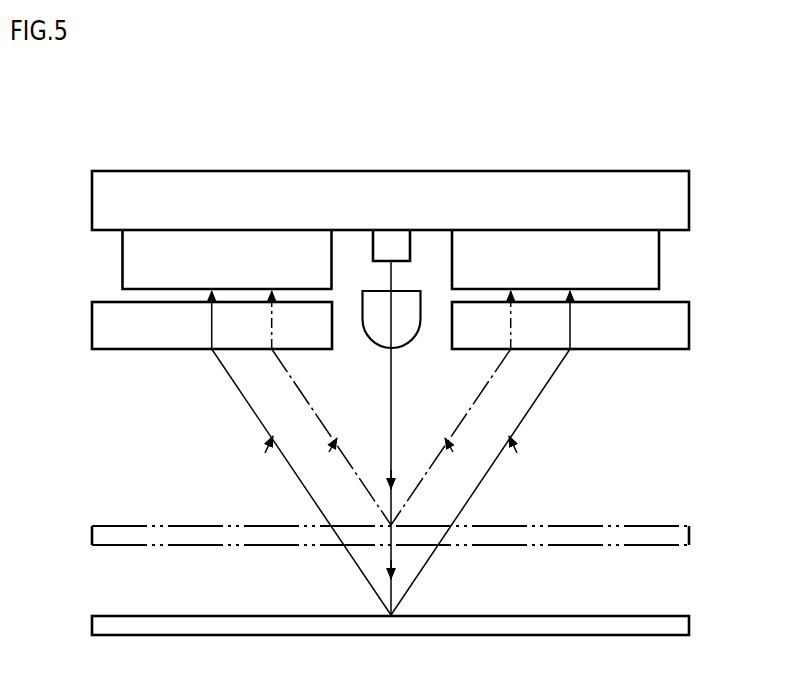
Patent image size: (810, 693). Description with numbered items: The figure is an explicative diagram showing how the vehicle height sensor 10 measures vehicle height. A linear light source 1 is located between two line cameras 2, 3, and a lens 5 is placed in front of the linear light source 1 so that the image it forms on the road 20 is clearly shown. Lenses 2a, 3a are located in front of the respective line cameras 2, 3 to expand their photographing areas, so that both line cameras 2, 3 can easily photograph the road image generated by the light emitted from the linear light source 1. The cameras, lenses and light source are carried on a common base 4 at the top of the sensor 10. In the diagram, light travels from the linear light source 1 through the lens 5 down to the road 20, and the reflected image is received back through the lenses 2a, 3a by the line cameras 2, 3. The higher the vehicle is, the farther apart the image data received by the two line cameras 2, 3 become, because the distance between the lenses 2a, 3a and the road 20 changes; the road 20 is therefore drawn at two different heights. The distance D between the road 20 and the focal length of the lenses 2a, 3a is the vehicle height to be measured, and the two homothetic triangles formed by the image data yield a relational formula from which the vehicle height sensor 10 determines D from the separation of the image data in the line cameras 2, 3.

The linear light source 1 is at (405, 247).
The line camera 2 is at (127, 257).
The line camera 3 is at (652, 260).
The lens 2a is at (103, 325).
The lens 3a is at (678, 328).
The substrate 4 is at (683, 200).
The lens 5 is at (402, 332).
The vehicle height sensor 10 is at (675, 153).
The road 20 is at (667, 532).
The vehicle height D is at (391, 420).